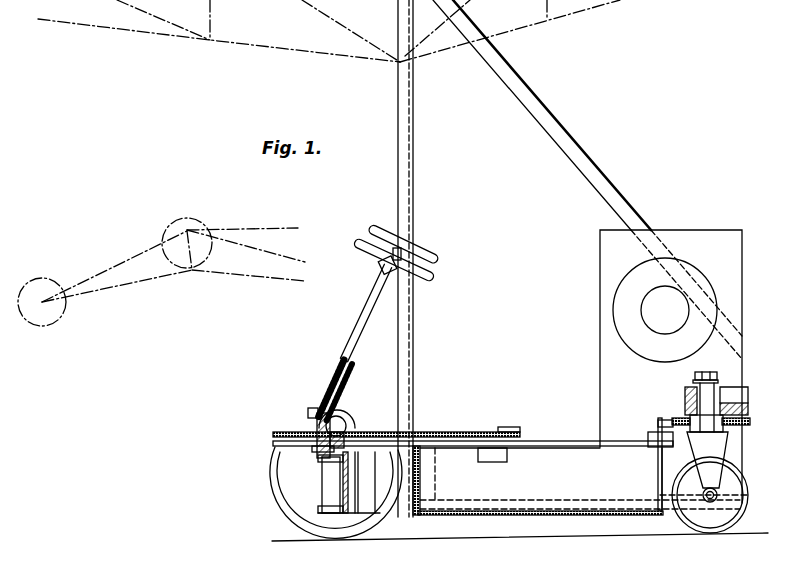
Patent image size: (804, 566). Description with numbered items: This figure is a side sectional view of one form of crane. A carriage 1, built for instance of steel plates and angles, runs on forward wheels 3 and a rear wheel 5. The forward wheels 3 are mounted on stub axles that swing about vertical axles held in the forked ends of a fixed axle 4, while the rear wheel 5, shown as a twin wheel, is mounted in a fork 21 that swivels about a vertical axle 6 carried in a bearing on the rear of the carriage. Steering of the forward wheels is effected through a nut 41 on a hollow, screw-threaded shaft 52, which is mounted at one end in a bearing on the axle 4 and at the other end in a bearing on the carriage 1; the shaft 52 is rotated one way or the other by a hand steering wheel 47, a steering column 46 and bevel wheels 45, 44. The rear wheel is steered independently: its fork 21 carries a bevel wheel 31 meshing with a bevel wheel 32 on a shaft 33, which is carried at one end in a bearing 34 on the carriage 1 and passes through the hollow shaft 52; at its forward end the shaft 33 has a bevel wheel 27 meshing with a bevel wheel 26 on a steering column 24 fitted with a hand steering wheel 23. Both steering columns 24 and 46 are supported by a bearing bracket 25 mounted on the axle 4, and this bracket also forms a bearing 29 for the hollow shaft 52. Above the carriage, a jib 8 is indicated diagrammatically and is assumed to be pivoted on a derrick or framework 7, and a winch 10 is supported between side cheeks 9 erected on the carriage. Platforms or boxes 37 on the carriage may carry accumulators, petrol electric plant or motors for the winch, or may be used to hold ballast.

The carriage 1 is at (660, 482).
The forward wheels 3 is at (276, 496).
The fixed axle 4 is at (345, 513).
The rear wheel 5 is at (742, 530).
The vertical axle 6 is at (710, 397).
The derrick or framework 7 is at (505, 80).
The jib 8 is at (306, 53).
The side cheeks 9 is at (706, 237).
The winch 10 is at (706, 293).
The fork 21 is at (720, 446).
The hand steering wheel 23 is at (420, 256).
The steering column 24 is at (343, 362).
The bearing bracket 25 is at (352, 388).
The bevel wheel 26 is at (313, 426).
The bevel wheel 27 is at (318, 449).
The bearing 29 is at (353, 428).
The bevel wheel 31 is at (751, 421).
The bevel wheel 32 is at (660, 450).
The shaft 33 is at (568, 433).
The bearing 34 is at (656, 430).
The platforms or boxes 37 is at (548, 513).
The nut 41 is at (414, 515).
The bevel wheel 44 is at (350, 417).
The bevel wheel 45 is at (310, 412).
The steering column 46 is at (366, 321).
The hand steering wheel 47 is at (438, 278).
The hollow screw-threaded shaft 52 is at (453, 432).